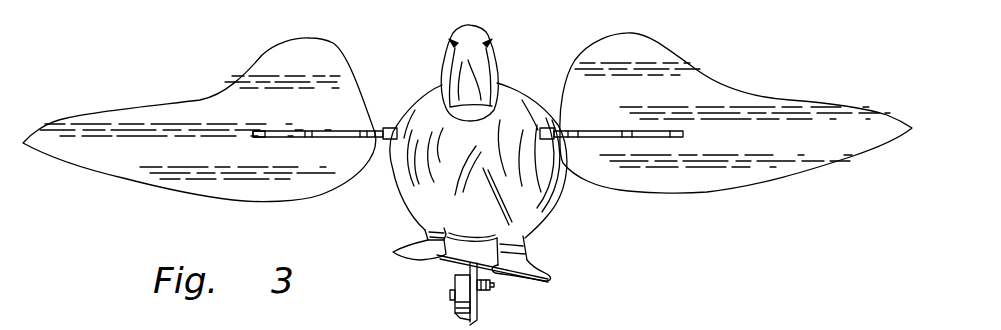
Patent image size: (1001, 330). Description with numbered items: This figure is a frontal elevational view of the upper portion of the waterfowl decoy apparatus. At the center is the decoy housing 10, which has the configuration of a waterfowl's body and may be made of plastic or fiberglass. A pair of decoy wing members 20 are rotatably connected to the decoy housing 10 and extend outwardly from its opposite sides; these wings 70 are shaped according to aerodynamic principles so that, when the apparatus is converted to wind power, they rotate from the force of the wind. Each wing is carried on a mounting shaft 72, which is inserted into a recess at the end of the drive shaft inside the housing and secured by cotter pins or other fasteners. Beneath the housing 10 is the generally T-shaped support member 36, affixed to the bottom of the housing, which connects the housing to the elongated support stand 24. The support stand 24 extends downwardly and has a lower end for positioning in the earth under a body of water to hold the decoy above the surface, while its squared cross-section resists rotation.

The decoy housing 10 is at (521, 79).
The decoy wing members 20 is at (122, 108).
The wings 70 is at (273, 78).
The mounting shafts 72 is at (340, 128).
The support member 36 is at (447, 258).
The elongated support stand 24 is at (477, 307).